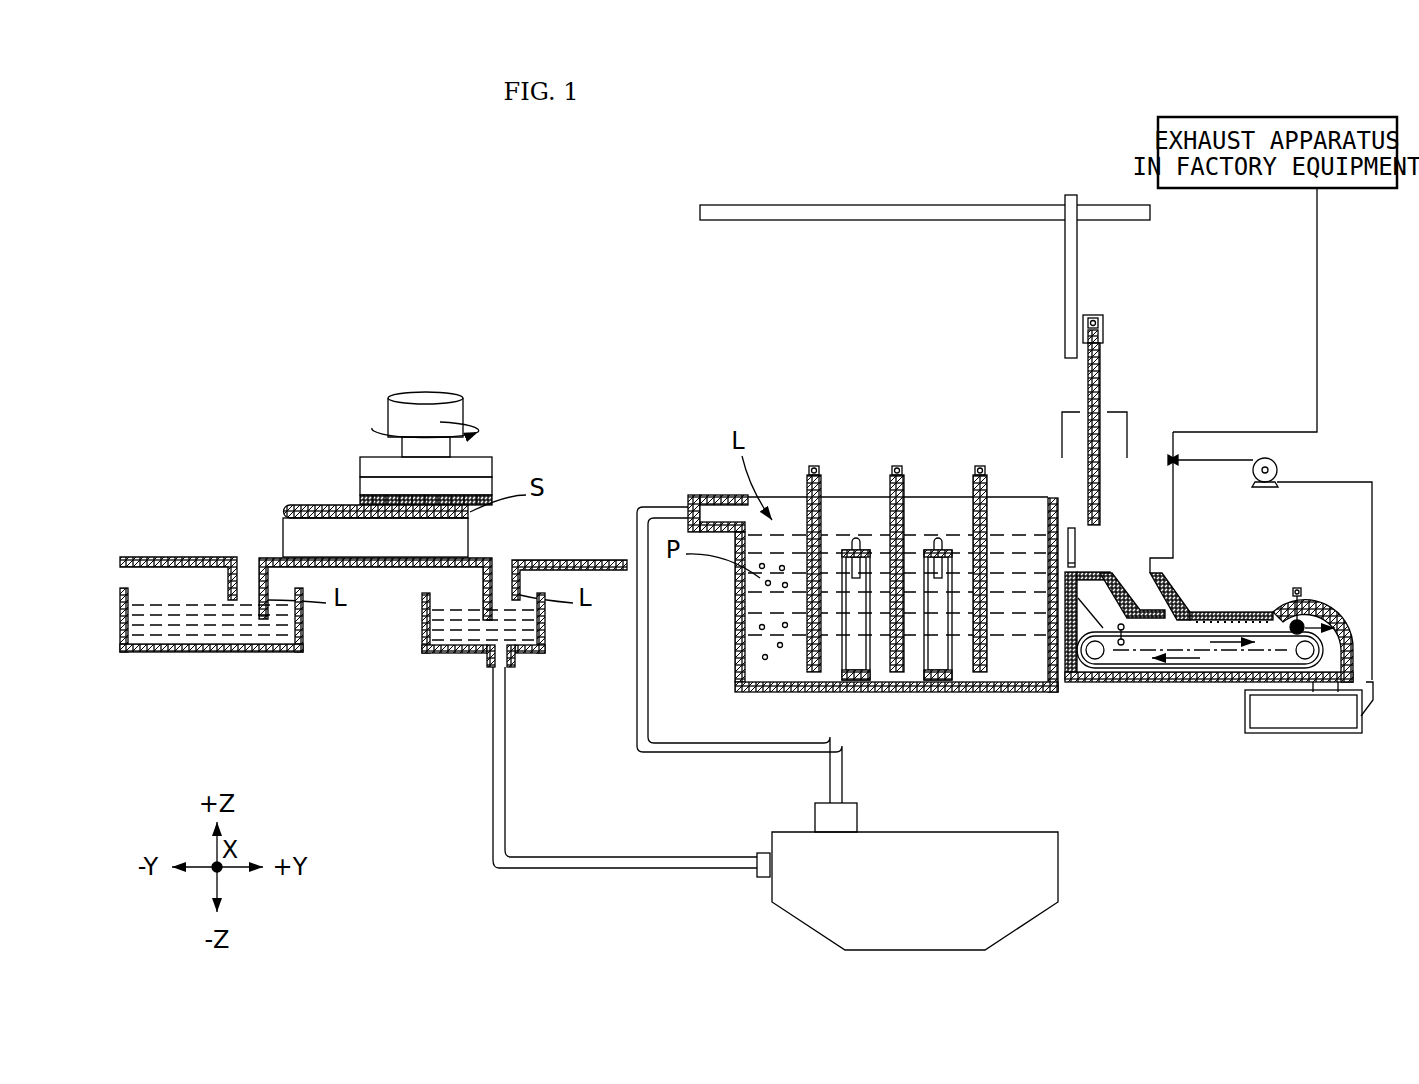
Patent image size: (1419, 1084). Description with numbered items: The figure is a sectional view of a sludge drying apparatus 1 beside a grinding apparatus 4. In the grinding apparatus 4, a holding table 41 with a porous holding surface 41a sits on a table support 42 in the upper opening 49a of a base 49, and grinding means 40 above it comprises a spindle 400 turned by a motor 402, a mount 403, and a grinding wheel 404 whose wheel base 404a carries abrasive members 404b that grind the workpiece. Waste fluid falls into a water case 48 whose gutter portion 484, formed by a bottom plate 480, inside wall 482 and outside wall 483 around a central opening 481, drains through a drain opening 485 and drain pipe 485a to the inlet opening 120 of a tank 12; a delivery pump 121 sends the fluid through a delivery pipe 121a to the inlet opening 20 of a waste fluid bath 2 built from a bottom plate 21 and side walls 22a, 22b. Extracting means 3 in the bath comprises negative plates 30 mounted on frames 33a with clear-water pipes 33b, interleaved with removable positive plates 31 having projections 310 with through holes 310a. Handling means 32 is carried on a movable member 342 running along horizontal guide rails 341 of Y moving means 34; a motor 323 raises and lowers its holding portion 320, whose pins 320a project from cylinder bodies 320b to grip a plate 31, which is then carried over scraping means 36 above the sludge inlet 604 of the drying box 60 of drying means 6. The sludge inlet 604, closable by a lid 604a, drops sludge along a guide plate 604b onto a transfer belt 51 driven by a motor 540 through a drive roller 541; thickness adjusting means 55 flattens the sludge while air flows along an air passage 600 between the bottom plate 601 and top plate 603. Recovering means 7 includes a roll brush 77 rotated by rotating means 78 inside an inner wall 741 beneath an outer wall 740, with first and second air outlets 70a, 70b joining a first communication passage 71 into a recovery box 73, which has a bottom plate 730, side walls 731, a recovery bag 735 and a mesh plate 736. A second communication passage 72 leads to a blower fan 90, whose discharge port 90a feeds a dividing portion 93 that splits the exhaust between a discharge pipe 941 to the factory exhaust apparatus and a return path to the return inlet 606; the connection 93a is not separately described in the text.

The sludge drying apparatus 1 is at (790, 392).
The waste fluid bath 2 is at (897, 706).
The extracting means 3 is at (1205, 355).
The grinding apparatus 4 is at (300, 352).
The drying means 6 is at (1183, 692).
The recovering means 7 is at (1322, 592).
The tank 12 is at (1066, 868).
The inlet opening 20 is at (695, 494).
The bottom plate 21 is at (880, 700).
The side walls 22a is at (785, 498).
The side walls 22b is at (735, 598).
The negative plates 30 is at (858, 680).
The positive plates 31 is at (813, 466).
The handling means 32 is at (1113, 315).
The frame 33a is at (853, 540).
The pipe 33b is at (934, 548).
The Y moving means 34 is at (1142, 236).
The scraping means 36 is at (1127, 434).
The grinding means 40 is at (375, 382).
The holding table 41 is at (290, 535).
The holding surface 41a is at (288, 507).
The table support 42 is at (378, 568).
The water case 48 is at (190, 640).
The base 49 is at (150, 560).
The upper opening 49a is at (518, 580).
The transfer belt 51 is at (1163, 685).
The thickness adjusting means 55 is at (1121, 647).
The drying box 60 is at (1068, 685).
The first air outlet 70a is at (1293, 620).
The second air outlet 70b is at (1303, 713).
The first communication passage 71 is at (1351, 660).
The second communication passage 72 is at (1370, 482).
The recovery box 73 is at (1258, 738).
The roll brush 77 is at (1290, 616).
The rotating means 78 is at (1300, 575).
The blower fan 90 is at (1273, 460).
The discharge port 90a is at (1258, 484).
The dividing portion 93 is at (1178, 460).
The valve pipe 93a is at (1232, 460).
The inlet opening 120 is at (757, 876).
The delivery pump 121 is at (857, 817).
The delivery pipe 121a is at (702, 752).
The projections 310 is at (894, 466).
The through hole 310a is at (906, 470).
The holding portion 320 is at (1086, 318).
The pin 320a is at (1103, 322).
The cylinder body 320b is at (1100, 316).
The motor 323 is at (1065, 330).
The horizontal guide rails 341 is at (820, 222).
The movable member 342 is at (1065, 300).
The spindle 400 is at (453, 395).
The motor 402 is at (463, 412).
The mount 403 is at (398, 462).
The grinding wheel 404 is at (345, 478).
The wheel base 404a is at (490, 487).
The abrasive members 404b is at (358, 500).
The bottom plate 480 is at (258, 650).
The central opening 481 is at (386, 600).
The inside wall 482 is at (299, 635).
The outside wall 483 is at (124, 630).
The gutter portion 484 is at (240, 636).
The drain opening 485 is at (506, 690).
The drain pipe 485a is at (598, 870).
The motor 540 is at (1090, 632).
The drive roller 541 is at (1108, 660).
The air passage 600 is at (1130, 605).
The bottom plate 601 is at (1208, 668).
The top plate 603 is at (1225, 612).
The sludge inlet 604 is at (1100, 462).
The lid 604a is at (1070, 528).
The guide plate 604b is at (1078, 600).
The return inlet 606 is at (1155, 573).
The bottom plate 730 is at (1338, 734).
The side walls 731 is at (1366, 718).
The recovery bag 735 is at (1313, 694).
The mesh plate 736 is at (1283, 735).
The outer wall 740 is at (1295, 588).
The inner wall 741 is at (1340, 614).
The discharge pipe 941 is at (1317, 275).